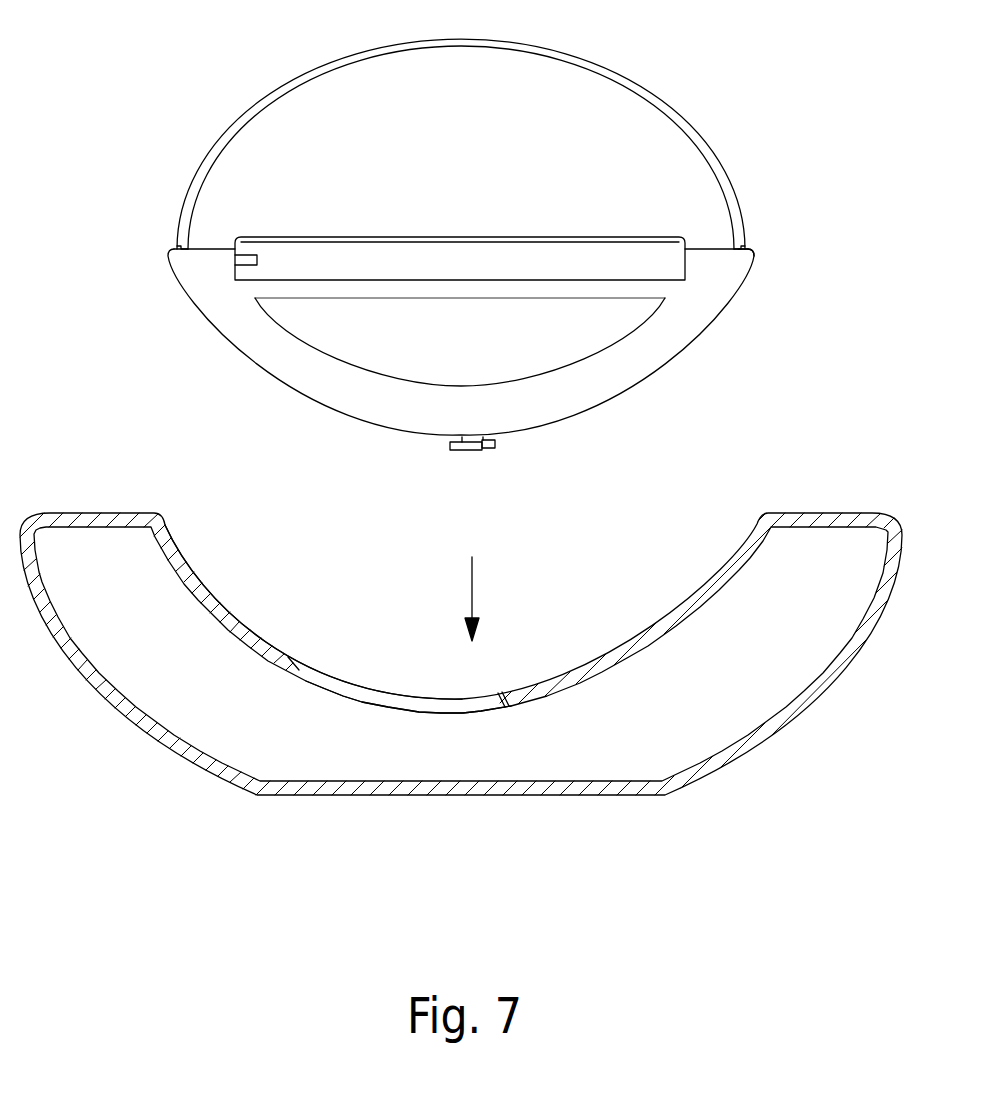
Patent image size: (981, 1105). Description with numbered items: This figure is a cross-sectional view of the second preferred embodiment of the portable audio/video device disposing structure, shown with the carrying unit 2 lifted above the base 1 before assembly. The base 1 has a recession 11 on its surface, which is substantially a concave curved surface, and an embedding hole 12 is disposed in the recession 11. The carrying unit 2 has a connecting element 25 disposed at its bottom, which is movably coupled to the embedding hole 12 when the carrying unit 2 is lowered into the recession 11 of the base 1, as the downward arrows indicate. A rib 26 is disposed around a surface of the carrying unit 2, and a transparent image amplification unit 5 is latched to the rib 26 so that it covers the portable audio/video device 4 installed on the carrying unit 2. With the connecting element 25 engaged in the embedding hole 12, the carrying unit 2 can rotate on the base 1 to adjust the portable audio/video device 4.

The base 1 is at (837, 683).
The recession 11 is at (237, 516).
The embedding hole 12 is at (345, 688).
The carrying unit 2 is at (173, 276).
The portable audio/video device 4 is at (293, 255).
The transparent image amplification unit 5 is at (720, 158).
The connecting element 25 is at (477, 447).
The rib 26 is at (745, 250).